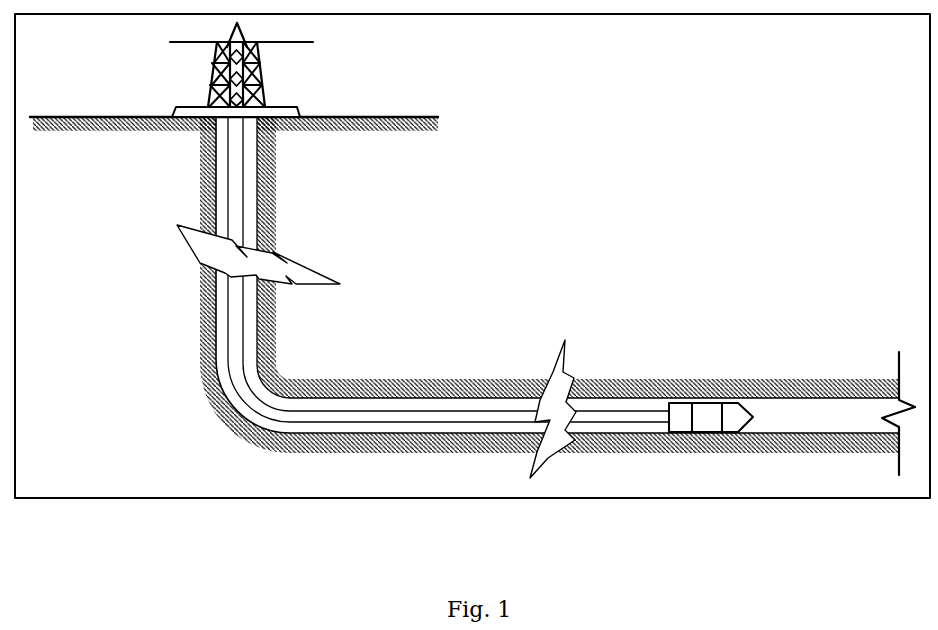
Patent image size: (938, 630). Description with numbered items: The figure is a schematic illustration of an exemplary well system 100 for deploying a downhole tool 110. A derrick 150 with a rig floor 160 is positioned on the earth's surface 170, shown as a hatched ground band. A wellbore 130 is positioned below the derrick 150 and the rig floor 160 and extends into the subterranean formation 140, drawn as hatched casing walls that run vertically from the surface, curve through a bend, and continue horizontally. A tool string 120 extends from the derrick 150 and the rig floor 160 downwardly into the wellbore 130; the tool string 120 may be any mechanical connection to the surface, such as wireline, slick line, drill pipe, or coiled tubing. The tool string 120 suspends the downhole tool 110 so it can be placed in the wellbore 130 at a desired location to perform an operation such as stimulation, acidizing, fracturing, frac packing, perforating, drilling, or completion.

The well system 100 is at (472, 250).
The downhole tool 110 is at (708, 416).
The tool string 120 is at (402, 412).
The wellbore 130 is at (285, 403).
The subterranean formation 140 is at (277, 197).
The derrick 150 is at (270, 100).
The rig floor 160 is at (173, 106).
The earth's surface 170 is at (91, 115).